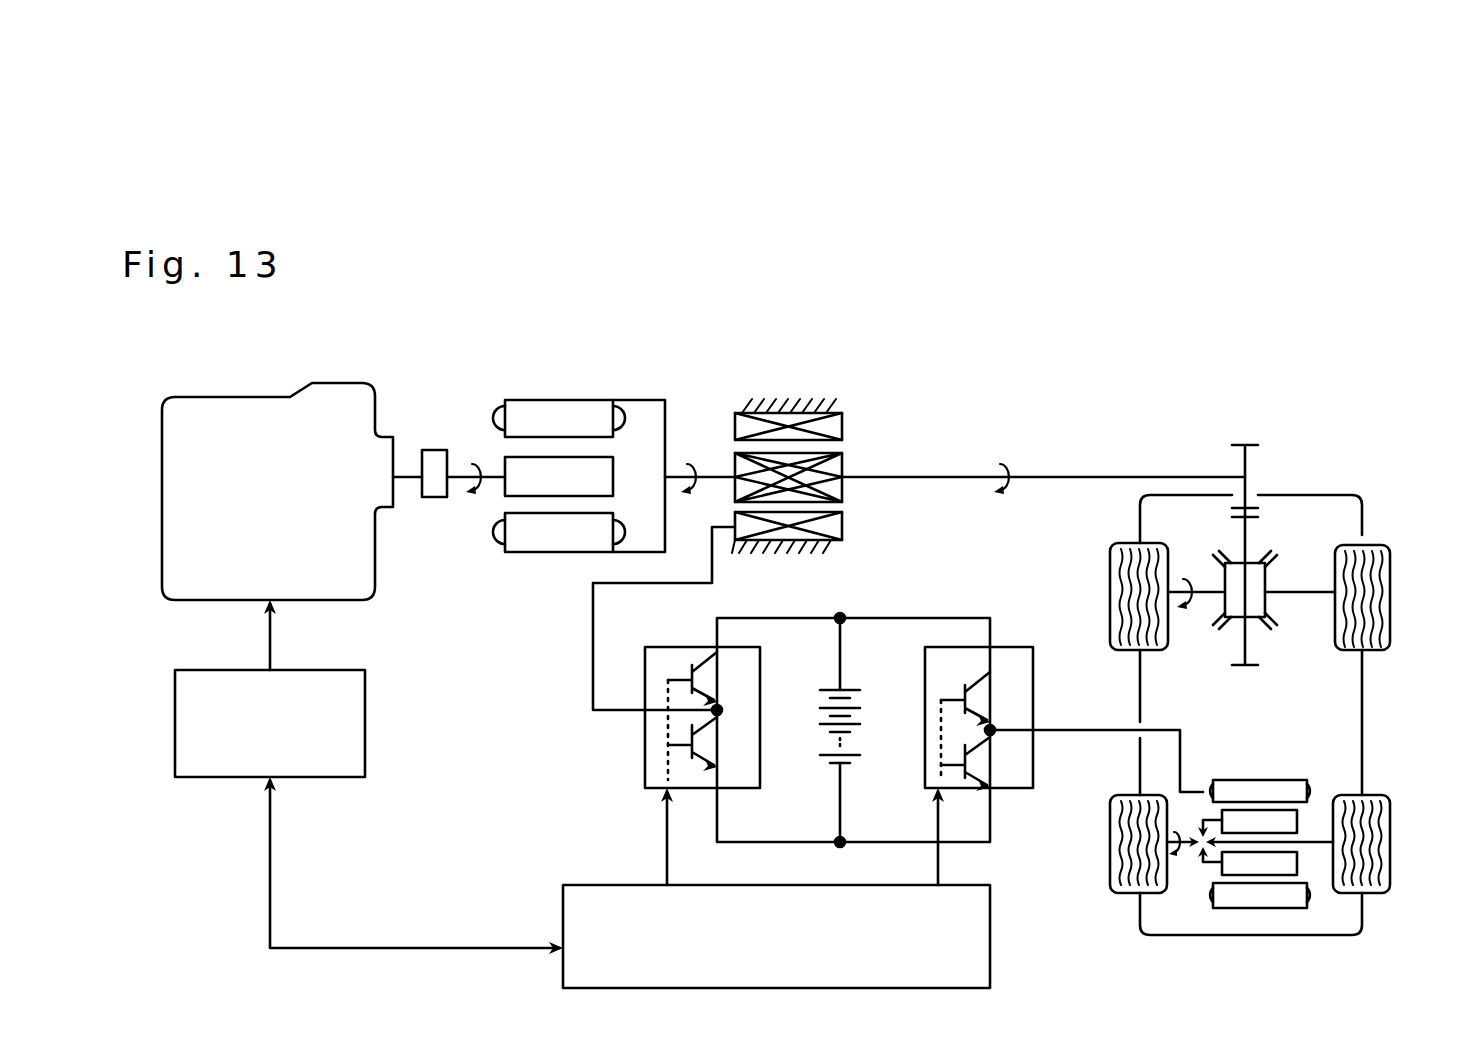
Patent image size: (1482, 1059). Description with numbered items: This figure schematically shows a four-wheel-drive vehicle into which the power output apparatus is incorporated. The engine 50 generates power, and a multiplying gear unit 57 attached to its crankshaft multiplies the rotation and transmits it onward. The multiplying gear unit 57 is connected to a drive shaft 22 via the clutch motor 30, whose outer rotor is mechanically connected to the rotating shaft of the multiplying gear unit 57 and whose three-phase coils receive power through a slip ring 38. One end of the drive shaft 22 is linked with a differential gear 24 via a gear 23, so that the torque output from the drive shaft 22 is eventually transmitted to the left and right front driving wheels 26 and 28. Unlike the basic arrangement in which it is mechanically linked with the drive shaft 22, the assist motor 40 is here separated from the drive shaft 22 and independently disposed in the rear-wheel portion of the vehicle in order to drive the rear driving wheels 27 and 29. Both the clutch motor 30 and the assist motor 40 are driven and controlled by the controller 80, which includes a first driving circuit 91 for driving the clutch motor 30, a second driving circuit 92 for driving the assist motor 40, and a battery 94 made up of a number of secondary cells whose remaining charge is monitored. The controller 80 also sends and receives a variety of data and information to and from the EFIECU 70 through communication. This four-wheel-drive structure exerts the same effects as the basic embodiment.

The drive shaft 22 is at (924, 477).
The gear 23 is at (1250, 440).
The differential gear 24 is at (1272, 577).
The front driving wheel 26 is at (1390, 555).
The rear driving wheel 27 is at (1390, 812).
The front driving wheel 28 is at (1110, 560).
The rear driving wheel 29 is at (1110, 822).
The clutch motor 30 is at (578, 392).
The slip ring 38 is at (842, 420).
The assist motor 40 is at (1270, 772).
The engine 50 is at (272, 397).
The multiplying gear unit 57 is at (435, 450).
The EFIECU 70 is at (365, 708).
The controller 80 is at (578, 885).
The first driving circuit 91 is at (760, 748).
The second driving circuit 92 is at (1017, 647).
The battery 94 is at (862, 740).